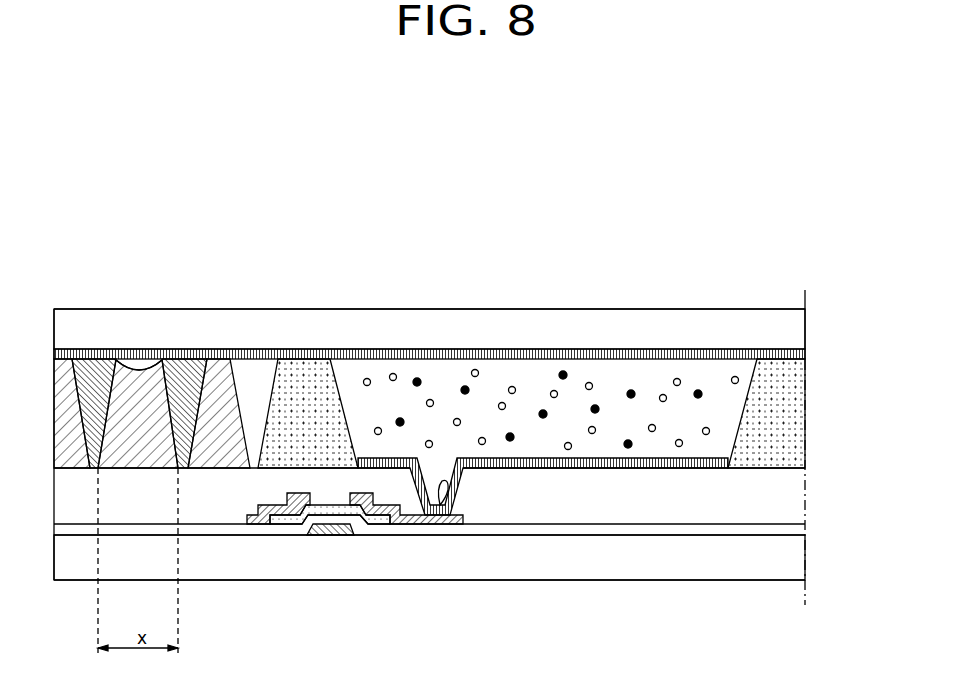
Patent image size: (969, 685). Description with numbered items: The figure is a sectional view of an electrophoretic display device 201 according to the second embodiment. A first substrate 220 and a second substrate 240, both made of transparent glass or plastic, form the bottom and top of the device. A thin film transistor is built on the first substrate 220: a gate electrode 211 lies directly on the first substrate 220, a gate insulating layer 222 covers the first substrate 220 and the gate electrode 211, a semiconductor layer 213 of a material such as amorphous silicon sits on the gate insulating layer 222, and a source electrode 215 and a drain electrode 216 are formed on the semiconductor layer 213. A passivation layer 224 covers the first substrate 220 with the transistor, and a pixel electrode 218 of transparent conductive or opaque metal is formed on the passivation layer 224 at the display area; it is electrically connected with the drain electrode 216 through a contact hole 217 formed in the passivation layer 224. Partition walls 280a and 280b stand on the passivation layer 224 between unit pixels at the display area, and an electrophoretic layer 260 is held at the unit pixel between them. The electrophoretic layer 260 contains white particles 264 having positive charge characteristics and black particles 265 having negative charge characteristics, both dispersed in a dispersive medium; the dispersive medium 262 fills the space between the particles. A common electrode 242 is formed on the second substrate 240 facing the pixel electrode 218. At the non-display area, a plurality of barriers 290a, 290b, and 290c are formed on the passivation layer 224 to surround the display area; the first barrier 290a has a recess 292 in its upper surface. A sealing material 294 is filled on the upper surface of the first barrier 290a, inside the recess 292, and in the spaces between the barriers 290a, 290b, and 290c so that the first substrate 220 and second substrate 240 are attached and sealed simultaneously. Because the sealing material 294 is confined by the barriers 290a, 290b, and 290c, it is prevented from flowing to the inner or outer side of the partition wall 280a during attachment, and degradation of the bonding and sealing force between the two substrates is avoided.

The electrophoretic display device 201 is at (803, 199).
The second substrate 240 is at (790, 324).
The common electrode 242 is at (790, 358).
The first barrier 290a is at (128, 450).
The second barrier 290b is at (72, 450).
The third barrier 290c is at (212, 448).
The recess 292 is at (132, 368).
The sealing material 294 is at (87, 375).
The first partition wall 280a is at (308, 383).
The second partition wall 280b is at (770, 383).
The electrophoretic layer 260 is at (552, 372).
The liquid crystal molecules 262 is at (625, 372).
The white particles 264 is at (512, 386).
The black particles 265 is at (465, 386).
The pixel electrode 218 is at (690, 458).
The contact hole 217 is at (447, 515).
The passivation layer 224 is at (790, 498).
The gate insulating layer 222 is at (790, 530).
The first substrate 220 is at (790, 567).
The gate electrode 211 is at (328, 532).
The semiconductor layer 213 is at (285, 515).
The source electrode 215 is at (257, 518).
The drain electrode 216 is at (420, 520).